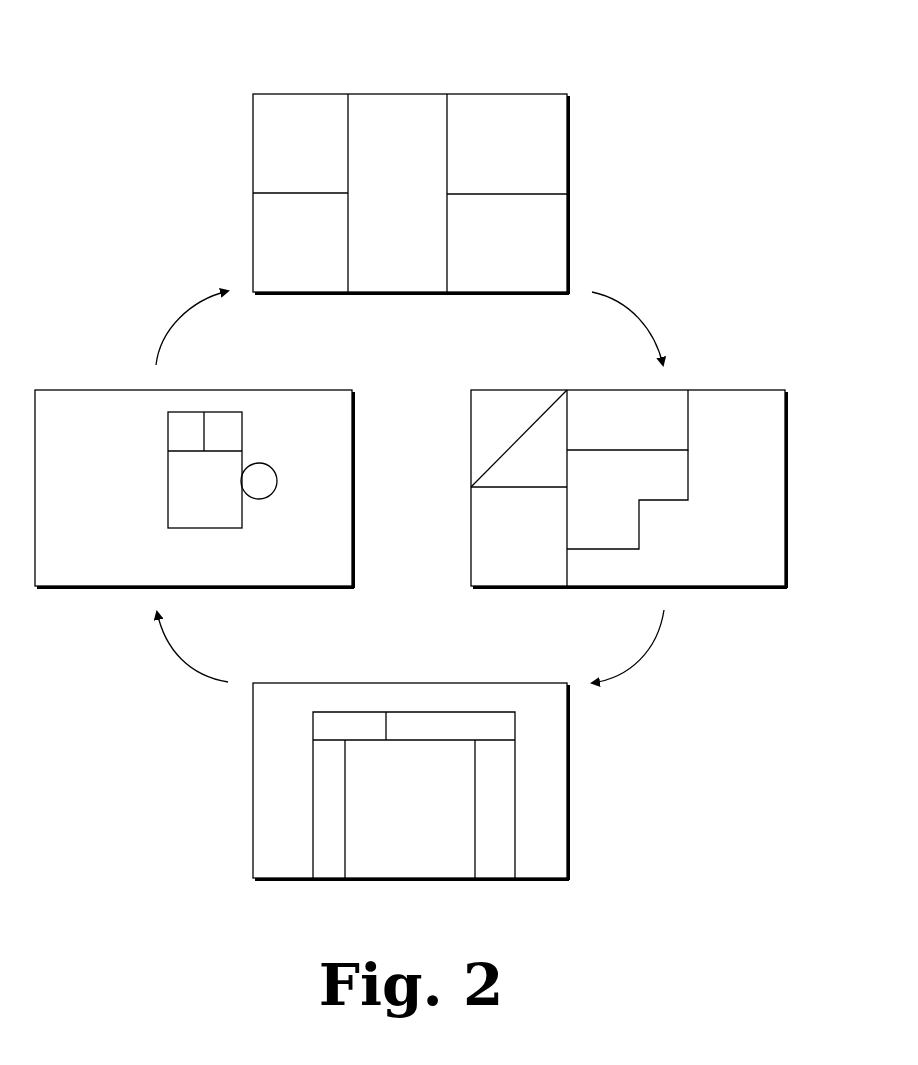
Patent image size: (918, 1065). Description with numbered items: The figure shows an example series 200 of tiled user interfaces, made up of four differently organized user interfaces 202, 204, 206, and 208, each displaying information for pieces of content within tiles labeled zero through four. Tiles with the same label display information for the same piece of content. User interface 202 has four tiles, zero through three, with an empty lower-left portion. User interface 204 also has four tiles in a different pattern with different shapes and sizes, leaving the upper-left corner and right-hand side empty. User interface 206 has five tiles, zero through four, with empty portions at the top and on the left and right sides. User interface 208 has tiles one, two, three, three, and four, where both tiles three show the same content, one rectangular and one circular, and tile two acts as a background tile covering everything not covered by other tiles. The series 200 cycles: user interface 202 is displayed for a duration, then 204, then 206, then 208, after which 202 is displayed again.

The series of tiled user interfaces 200 is at (185, 19).
The user interface 202 is at (322, 93).
The user interface 204 is at (541, 390).
The user interface 206 is at (322, 683).
The user interface 208 is at (107, 390).